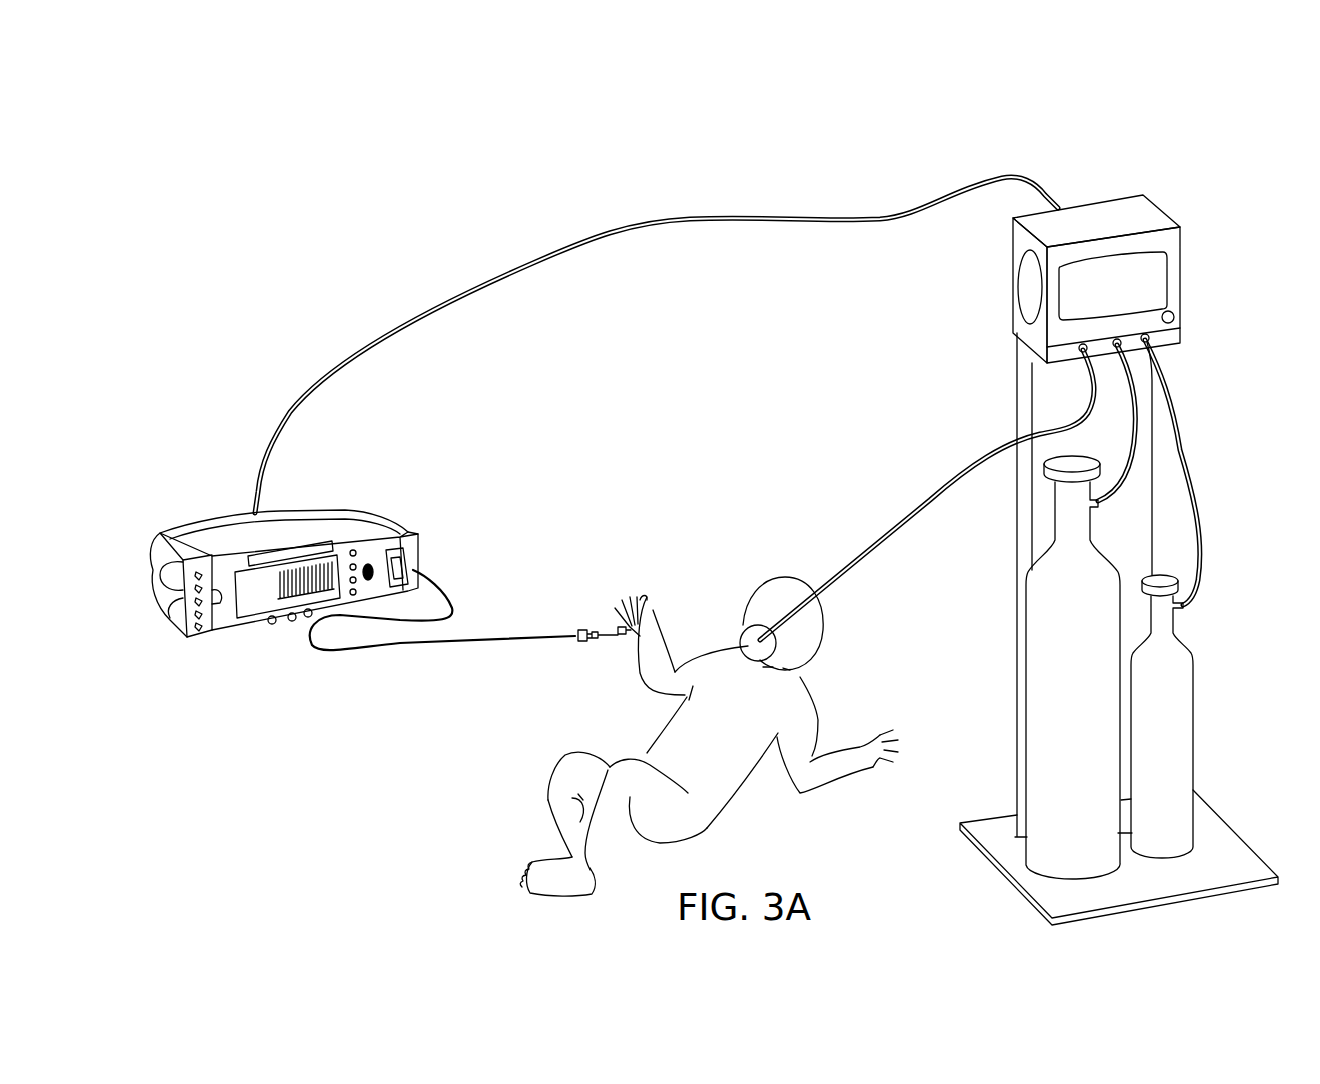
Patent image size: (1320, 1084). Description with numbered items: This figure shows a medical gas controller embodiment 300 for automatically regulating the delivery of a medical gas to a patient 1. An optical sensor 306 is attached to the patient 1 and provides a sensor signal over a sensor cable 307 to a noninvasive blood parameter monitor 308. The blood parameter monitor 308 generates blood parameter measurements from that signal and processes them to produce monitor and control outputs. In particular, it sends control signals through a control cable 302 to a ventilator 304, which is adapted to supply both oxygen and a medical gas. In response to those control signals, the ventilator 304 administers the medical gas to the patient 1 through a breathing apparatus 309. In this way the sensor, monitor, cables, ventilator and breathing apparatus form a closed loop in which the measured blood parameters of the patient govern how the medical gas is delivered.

The medical gas controller embodiment 300 is at (747, 131).
The control cable 302 is at (1010, 173).
The ventilator 304 is at (1152, 215).
The optical sensor 306 is at (600, 640).
The sensor cable 307 is at (463, 640).
The noninvasive blood parameter monitor 308 is at (218, 532).
The breathing apparatus 309 is at (917, 510).
The patient 1 is at (830, 775).